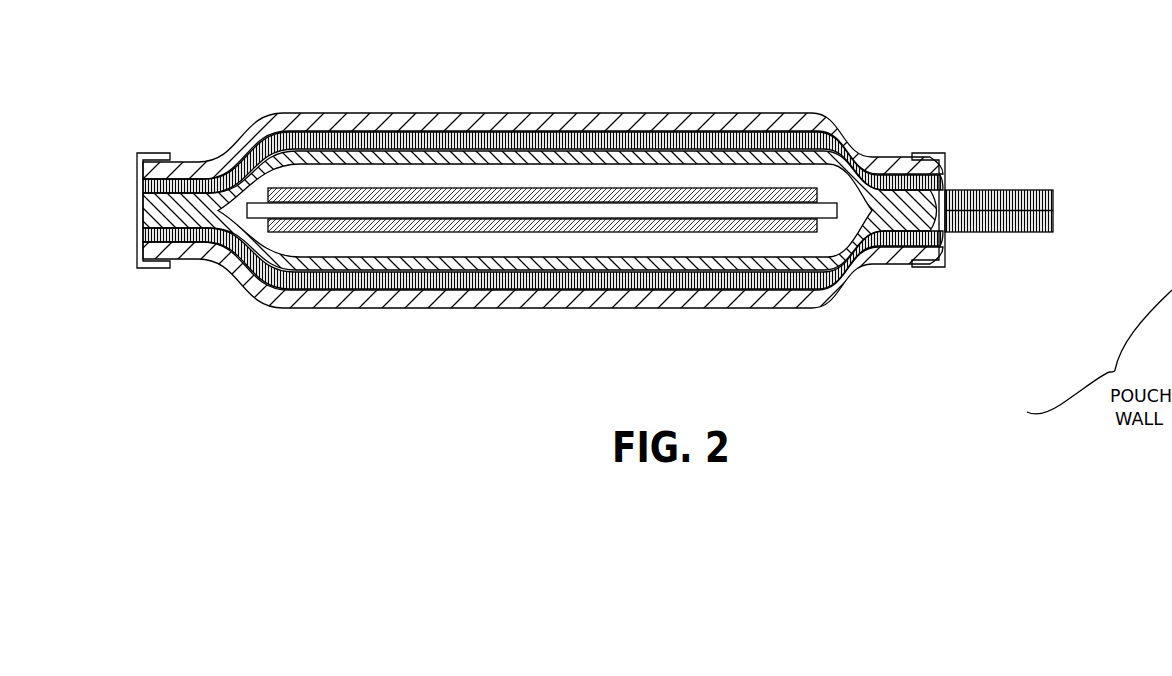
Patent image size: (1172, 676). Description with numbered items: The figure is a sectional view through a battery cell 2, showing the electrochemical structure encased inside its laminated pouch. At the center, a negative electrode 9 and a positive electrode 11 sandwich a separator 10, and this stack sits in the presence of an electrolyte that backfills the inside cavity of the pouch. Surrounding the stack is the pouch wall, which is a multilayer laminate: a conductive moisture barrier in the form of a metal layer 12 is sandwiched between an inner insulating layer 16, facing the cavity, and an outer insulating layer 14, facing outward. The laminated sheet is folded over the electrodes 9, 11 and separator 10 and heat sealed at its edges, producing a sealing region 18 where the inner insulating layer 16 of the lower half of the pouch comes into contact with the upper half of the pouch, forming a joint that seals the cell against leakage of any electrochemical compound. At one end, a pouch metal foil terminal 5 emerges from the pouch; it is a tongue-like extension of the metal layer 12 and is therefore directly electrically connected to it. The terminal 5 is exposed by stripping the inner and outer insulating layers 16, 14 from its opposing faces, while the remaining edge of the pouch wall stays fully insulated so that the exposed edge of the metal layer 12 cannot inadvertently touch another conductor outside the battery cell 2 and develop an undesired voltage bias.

The battery cell 2 is at (345, 336).
The pouch metal foil terminal 5 is at (993, 188).
The negative electrode 9 is at (345, 190).
The separator 10 is at (680, 210).
The positive electrode 11 is at (755, 234).
The metal layer 12 is at (883, 257).
The outer insulating layer 14 is at (873, 255).
The inner insulating layer 16 is at (875, 250).
The sealing region 18 is at (902, 208).